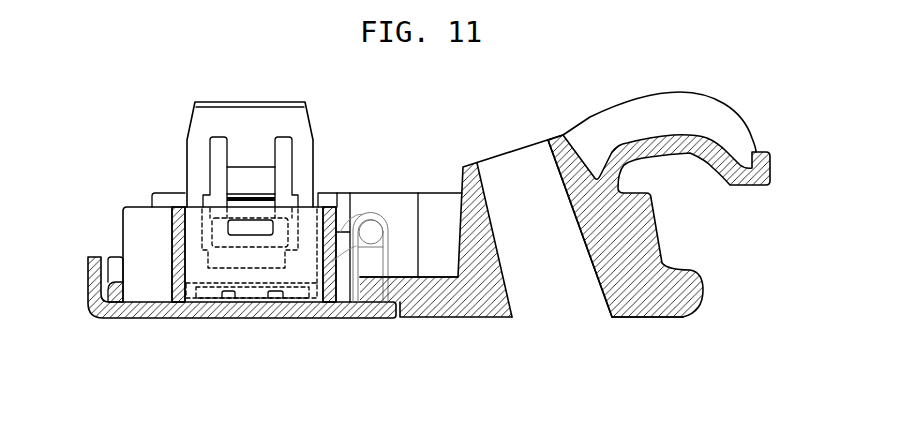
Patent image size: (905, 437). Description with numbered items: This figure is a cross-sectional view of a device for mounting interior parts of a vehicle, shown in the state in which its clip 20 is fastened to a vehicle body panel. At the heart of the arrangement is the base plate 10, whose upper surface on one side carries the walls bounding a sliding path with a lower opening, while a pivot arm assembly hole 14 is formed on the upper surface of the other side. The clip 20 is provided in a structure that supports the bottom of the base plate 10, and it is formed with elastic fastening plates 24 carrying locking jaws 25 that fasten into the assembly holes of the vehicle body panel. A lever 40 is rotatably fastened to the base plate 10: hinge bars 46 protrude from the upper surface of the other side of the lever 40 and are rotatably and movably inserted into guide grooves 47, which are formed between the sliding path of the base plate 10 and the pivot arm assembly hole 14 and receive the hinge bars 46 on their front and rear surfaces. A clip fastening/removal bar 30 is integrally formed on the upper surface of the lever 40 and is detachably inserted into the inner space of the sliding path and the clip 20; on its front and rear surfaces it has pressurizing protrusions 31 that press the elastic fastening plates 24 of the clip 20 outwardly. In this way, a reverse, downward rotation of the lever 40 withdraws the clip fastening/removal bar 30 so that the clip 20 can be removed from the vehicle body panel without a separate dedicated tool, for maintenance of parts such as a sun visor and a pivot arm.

The base plate 10 is at (431, 318).
The pivot arm assembly hole 14 is at (513, 160).
The clip 20 is at (191, 115).
The elastic fastening plate 24 is at (230, 177).
The locking jaw 25 is at (257, 198).
The clip fastening/removal bar 30 is at (174, 243).
The pressurizing protrusion 31 is at (245, 236).
The lever 40 is at (127, 318).
The hinge bar 46 is at (368, 263).
The guide groove 47 is at (336, 256).